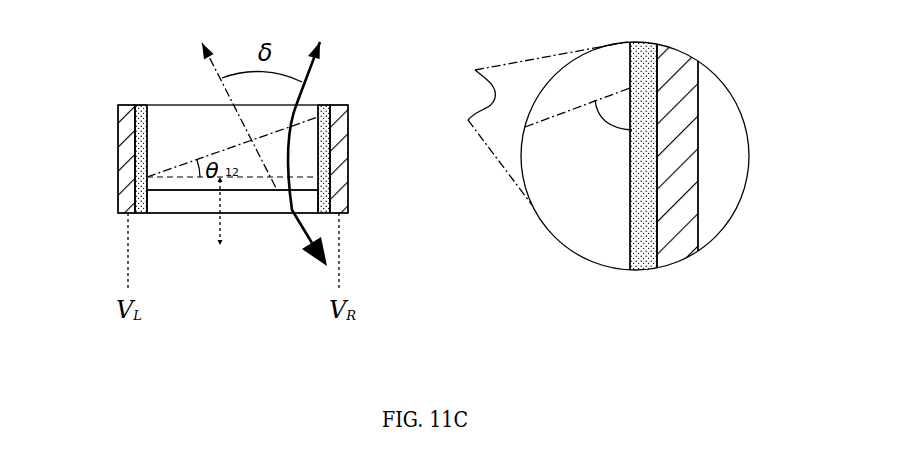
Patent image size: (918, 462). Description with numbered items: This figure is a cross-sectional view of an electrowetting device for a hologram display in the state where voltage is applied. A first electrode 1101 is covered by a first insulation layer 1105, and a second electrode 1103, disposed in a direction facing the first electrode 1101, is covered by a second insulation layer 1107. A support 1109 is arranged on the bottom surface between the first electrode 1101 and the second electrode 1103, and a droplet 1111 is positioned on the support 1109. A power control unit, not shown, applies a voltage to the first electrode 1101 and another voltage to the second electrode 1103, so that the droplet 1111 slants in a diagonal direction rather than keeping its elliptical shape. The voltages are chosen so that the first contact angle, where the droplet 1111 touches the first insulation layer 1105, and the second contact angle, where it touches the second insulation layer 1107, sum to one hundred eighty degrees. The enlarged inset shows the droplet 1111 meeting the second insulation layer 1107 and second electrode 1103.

The first electrode 1101 is at (128, 117).
The first insulation layer 1105 is at (140, 137).
The second electrode 1103 is at (344, 118).
The second insulation layer 1107 is at (337, 142).
The support 1109 is at (183, 205).
The droplet 1111 is at (247, 192).